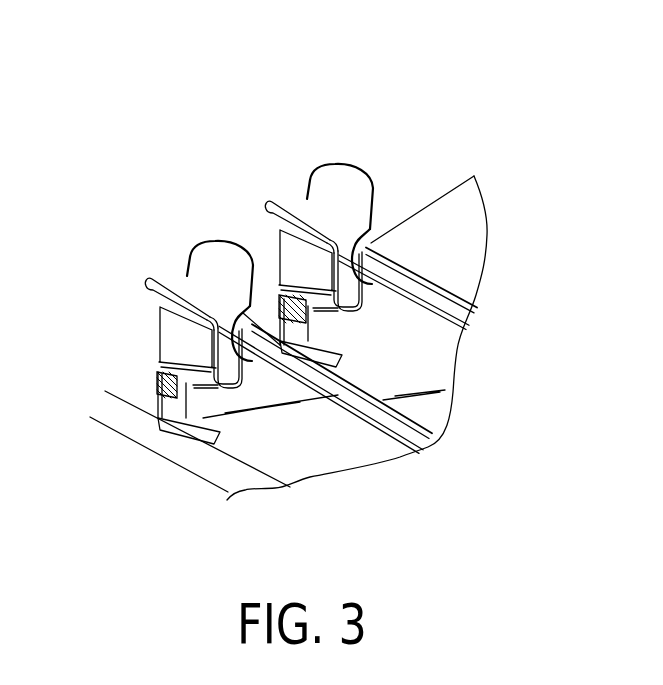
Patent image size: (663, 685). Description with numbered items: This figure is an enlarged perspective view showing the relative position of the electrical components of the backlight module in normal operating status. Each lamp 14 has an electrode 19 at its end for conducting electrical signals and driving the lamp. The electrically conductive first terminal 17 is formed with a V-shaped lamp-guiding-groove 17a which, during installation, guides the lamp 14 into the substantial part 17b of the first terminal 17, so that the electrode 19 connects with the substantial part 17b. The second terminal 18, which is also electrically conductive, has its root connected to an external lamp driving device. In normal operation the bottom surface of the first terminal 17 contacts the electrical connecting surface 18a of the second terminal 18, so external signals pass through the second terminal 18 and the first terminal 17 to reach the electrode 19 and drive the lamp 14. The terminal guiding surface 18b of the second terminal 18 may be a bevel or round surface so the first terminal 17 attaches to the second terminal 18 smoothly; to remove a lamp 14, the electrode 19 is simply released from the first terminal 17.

The lamp 14 is at (443, 289).
The first terminal 17 is at (250, 112).
The lamp-guiding-groove 17a is at (310, 208).
The substantial part 17b is at (298, 265).
The electrode 19 is at (374, 209).
The second terminal 18 is at (240, 437).
The electrical connecting surface 18a is at (160, 381).
The terminal guiding surface 18b is at (188, 384).